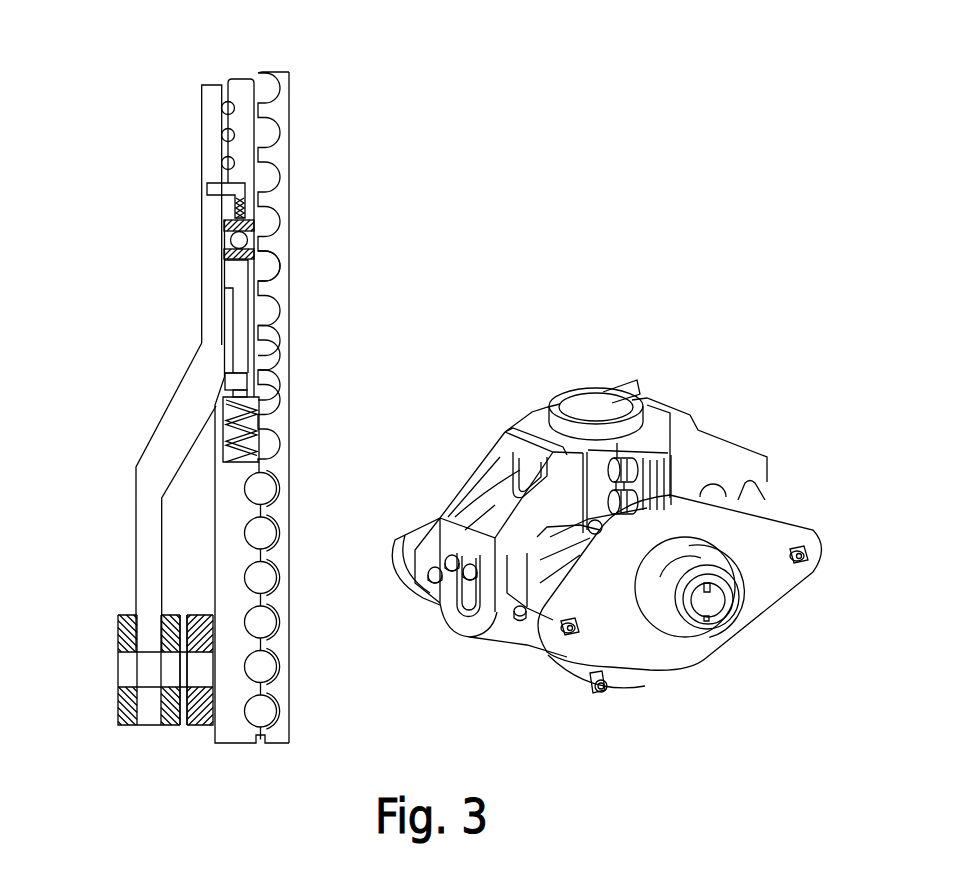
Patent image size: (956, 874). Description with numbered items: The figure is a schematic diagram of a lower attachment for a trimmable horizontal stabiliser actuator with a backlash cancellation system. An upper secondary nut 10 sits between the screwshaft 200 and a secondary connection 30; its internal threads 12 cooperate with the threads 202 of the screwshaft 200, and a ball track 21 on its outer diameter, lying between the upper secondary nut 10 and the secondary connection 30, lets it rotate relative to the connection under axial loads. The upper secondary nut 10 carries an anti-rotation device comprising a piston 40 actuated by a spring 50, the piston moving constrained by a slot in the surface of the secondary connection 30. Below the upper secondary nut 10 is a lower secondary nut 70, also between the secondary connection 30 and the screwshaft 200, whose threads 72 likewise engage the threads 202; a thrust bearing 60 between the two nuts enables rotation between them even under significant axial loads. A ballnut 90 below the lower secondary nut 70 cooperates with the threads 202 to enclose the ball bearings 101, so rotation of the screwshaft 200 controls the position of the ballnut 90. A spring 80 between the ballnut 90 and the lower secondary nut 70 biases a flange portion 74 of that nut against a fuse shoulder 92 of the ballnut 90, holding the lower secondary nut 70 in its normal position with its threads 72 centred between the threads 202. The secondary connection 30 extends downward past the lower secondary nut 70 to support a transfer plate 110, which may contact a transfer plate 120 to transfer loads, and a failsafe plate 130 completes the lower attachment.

The upper secondary nut 10 is at (233, 82).
The internal threads 12 is at (268, 83).
The ball track 21 is at (222, 108).
The secondary connection 30 is at (208, 140).
The piston 40 is at (215, 185).
The spring 50 is at (237, 205).
The thrust bearing 60 is at (231, 237).
The lower secondary nut 70 is at (235, 277).
The threads 72 is at (266, 266).
The flange portion 74 is at (250, 393).
The spring 80 is at (233, 400).
The ballnut 90 is at (218, 440).
The fuse shoulder 92 is at (222, 377).
The ball bearings 101 is at (244, 490).
The transfer plate 110 is at (130, 622).
The transfer plate 120 is at (185, 715).
The failsafe plate 130 is at (647, 667).
The screwshaft 200 is at (277, 330).
The threads 202 is at (265, 375).